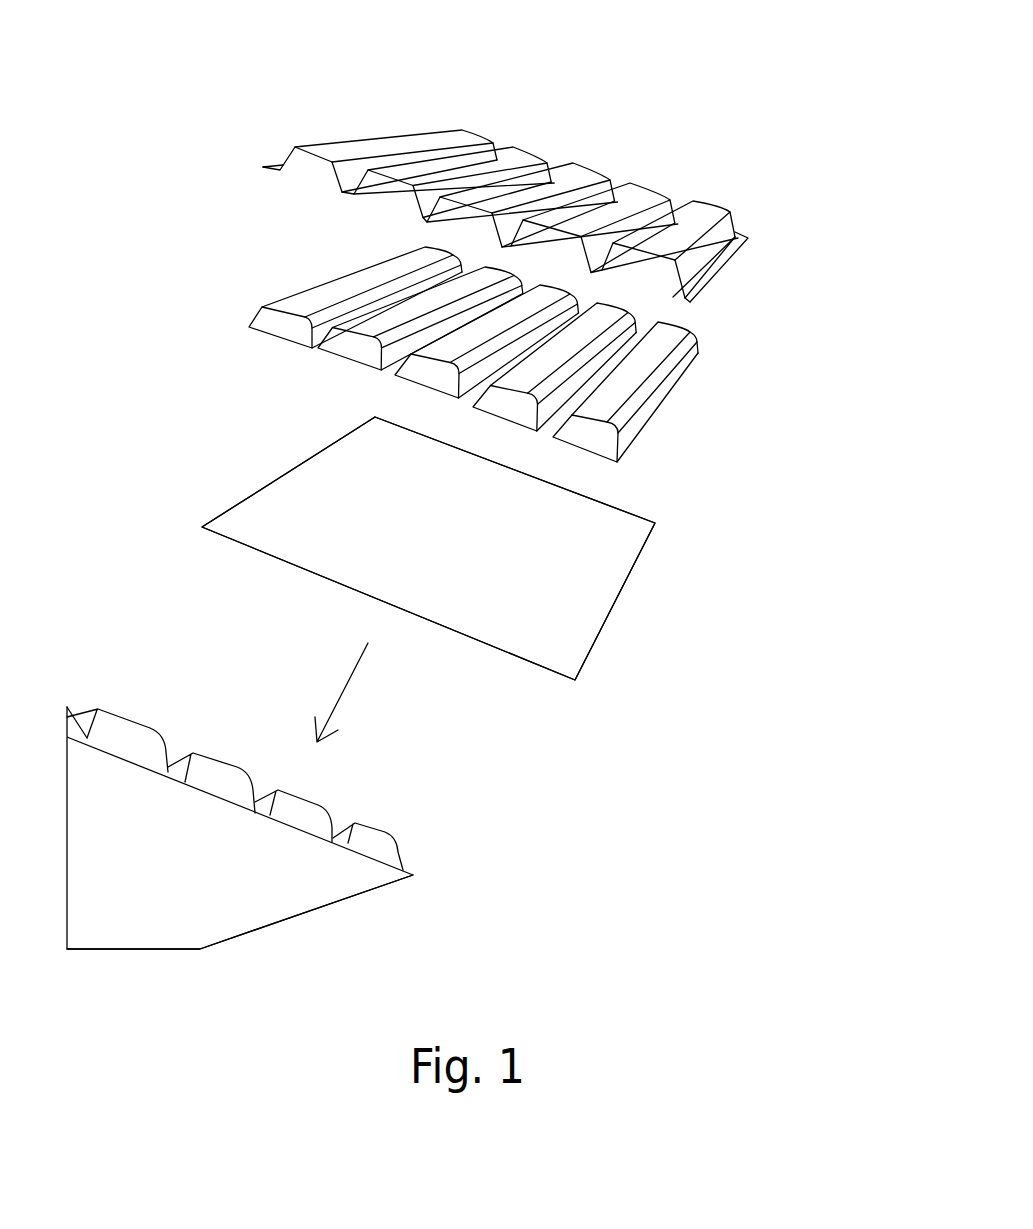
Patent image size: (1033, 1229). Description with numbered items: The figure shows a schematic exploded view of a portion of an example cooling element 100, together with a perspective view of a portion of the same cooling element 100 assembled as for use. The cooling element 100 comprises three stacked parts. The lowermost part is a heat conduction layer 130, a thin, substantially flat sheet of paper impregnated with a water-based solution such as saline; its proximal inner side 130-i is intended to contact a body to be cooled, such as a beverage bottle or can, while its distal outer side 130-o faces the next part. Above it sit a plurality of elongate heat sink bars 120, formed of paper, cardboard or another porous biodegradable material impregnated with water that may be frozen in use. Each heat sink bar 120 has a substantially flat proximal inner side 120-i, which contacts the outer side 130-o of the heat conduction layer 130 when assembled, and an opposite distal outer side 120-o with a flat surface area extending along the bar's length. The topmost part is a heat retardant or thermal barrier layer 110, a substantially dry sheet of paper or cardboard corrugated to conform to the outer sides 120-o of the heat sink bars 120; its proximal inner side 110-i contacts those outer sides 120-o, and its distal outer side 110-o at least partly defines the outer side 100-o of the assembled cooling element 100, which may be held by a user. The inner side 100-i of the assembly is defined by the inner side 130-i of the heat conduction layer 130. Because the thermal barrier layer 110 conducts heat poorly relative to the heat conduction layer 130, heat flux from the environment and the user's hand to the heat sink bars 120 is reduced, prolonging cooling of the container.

The cooling element 100 is at (622, 138).
The distal outer side of cooling element 100-o is at (396, 806).
The proximal inner side of cooling element 100-i is at (354, 916).
The heat retardant layer 110 is at (713, 250).
The distal outer side of thermal barrier layer 110-o is at (371, 120).
The proximal inner side of thermal barrier layer 110-i is at (306, 182).
The heat sink bars 120 is at (652, 403).
The distal outer side of heat sink bar 120-o is at (347, 292).
The proximal inner side of heat sink bar 120-i is at (277, 354).
The heat conduction layer 130 is at (602, 600).
The distal outer side of heat conduction layer 130-o is at (298, 503).
The proximal inner side of heat conduction layer 130-i is at (254, 581).